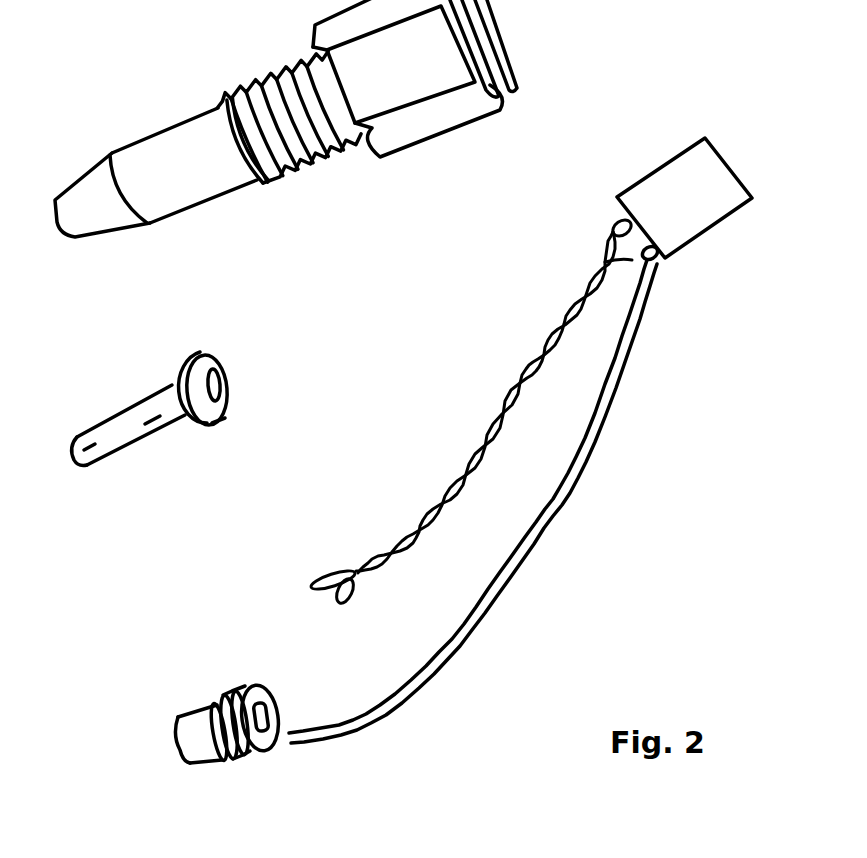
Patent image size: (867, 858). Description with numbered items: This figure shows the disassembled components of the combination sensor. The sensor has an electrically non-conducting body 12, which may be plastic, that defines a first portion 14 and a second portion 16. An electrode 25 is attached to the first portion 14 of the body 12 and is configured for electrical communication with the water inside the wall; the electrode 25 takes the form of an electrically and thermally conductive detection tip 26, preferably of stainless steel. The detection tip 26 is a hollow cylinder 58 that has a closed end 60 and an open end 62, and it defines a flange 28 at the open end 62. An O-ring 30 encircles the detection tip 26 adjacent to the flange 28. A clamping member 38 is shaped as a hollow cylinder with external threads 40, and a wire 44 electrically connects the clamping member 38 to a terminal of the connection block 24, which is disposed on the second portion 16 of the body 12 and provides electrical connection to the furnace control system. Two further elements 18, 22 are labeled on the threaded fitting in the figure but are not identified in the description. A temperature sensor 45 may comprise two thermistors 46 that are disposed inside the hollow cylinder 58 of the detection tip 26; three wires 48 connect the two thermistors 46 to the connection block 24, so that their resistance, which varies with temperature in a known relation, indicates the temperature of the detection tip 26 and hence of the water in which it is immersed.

The body 12 is at (172, 128).
The first portion 14 is at (92, 170).
The second portion 16 is at (502, 100).
The threads 18 is at (307, 165).
The hex nut 22 is at (440, 120).
The connection block 24 is at (713, 137).
The electrode 25 is at (120, 412).
The detection tip 26 is at (87, 432).
The flange 28 is at (225, 418).
The O-ring 30 is at (177, 375).
The open end 62 is at (220, 380).
The hollow cylinder 58 is at (152, 420).
The closed end 60 is at (90, 445).
The wires 48 is at (472, 463).
The thermistors 46 is at (317, 575).
The temperature sensor 45 is at (347, 598).
The wire 44 is at (455, 645).
The external threads 40 is at (193, 712).
The clamping member 38 is at (242, 747).